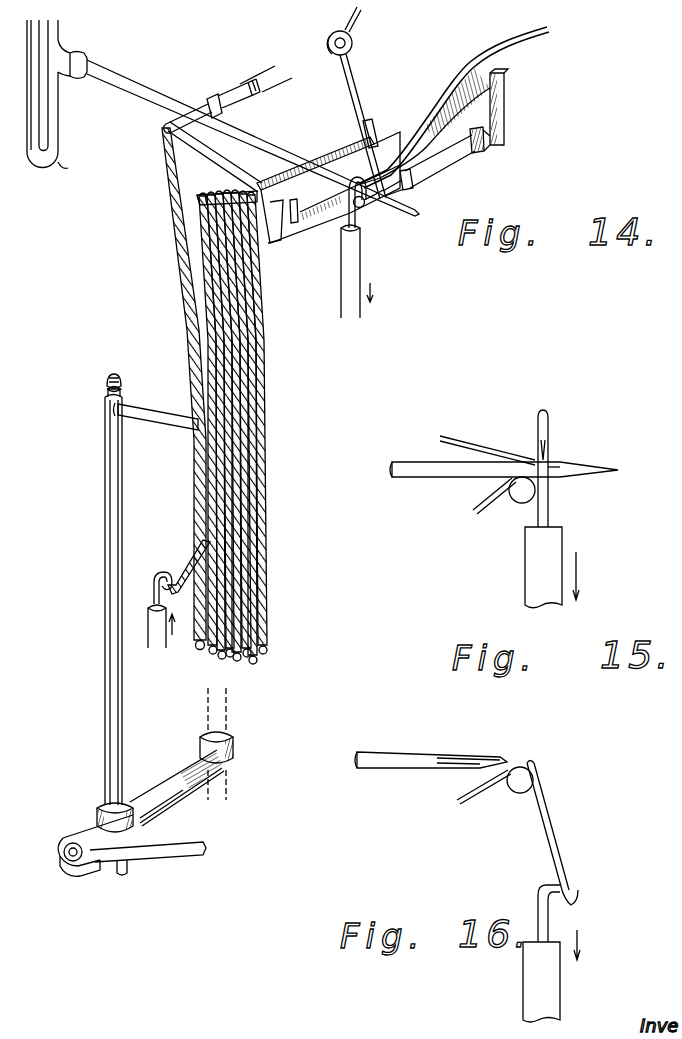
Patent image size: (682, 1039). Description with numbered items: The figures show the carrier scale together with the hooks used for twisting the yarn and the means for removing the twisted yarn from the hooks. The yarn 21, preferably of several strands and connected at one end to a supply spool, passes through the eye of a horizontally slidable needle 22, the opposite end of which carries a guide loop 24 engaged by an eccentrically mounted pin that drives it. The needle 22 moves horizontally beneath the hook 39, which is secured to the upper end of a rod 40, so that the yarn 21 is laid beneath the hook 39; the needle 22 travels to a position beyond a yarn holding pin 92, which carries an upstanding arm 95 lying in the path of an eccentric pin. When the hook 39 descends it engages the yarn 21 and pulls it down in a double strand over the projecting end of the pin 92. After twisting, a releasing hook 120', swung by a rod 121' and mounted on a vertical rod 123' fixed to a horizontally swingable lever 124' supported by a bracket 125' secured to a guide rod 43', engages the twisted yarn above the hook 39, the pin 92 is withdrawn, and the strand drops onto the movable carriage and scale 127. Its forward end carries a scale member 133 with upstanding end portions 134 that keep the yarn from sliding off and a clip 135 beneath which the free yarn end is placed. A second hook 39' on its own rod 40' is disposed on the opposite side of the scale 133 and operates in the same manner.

In FIG. 14, the yarn 21 is at (330, 33).
In FIG. 15, the yarn 21 is at (465, 446).
In FIG. 14, the needle 22 is at (404, 215).
In FIG. 15, the needle 22 is at (432, 478).
In FIG. 16, the needle 22 is at (412, 754).
In FIG. 14, the guide loop 24 is at (57, 109).
In FIG. 14, the hook 39 is at (329, 225).
In FIG. 15, the hook 39 is at (560, 465).
In FIG. 16, the hook 39 is at (569, 852).
In FIG. 14, the rod 40 is at (332, 272).
In FIG. 15, the rod 40 is at (520, 567).
In FIG. 16, the rod 40 is at (567, 976).
In FIG. 14, the yarn holding pin 92 is at (364, 210).
In FIG. 15, the yarn holding pin 92 is at (518, 500).
In FIG. 16, the yarn holding pin 92 is at (519, 792).
In FIG. 14, the upstanding arm 95 is at (505, 114).
In FIG. 14, the movable carriage and scale 127 is at (533, 53).
In FIG. 14, the scale member 133 is at (328, 146).
In FIG. 14, the upstanding end portions 134 is at (200, 196).
In FIG. 14, the clip 135 is at (272, 232).
In FIG. 14, the rod 120' is at (156, 432).
In FIG. 14, the lever 121' is at (148, 871).
In FIG. 14, the vertical rod 123' is at (83, 624).
In FIG. 14, the collar 124' is at (76, 839).
In FIG. 14, the arm 125' is at (208, 788).
In FIG. 14, the second hook 39' is at (172, 568).
In FIG. 14, the rod 40' is at (164, 646).
In FIG. 14, the shaft 43' is at (235, 744).